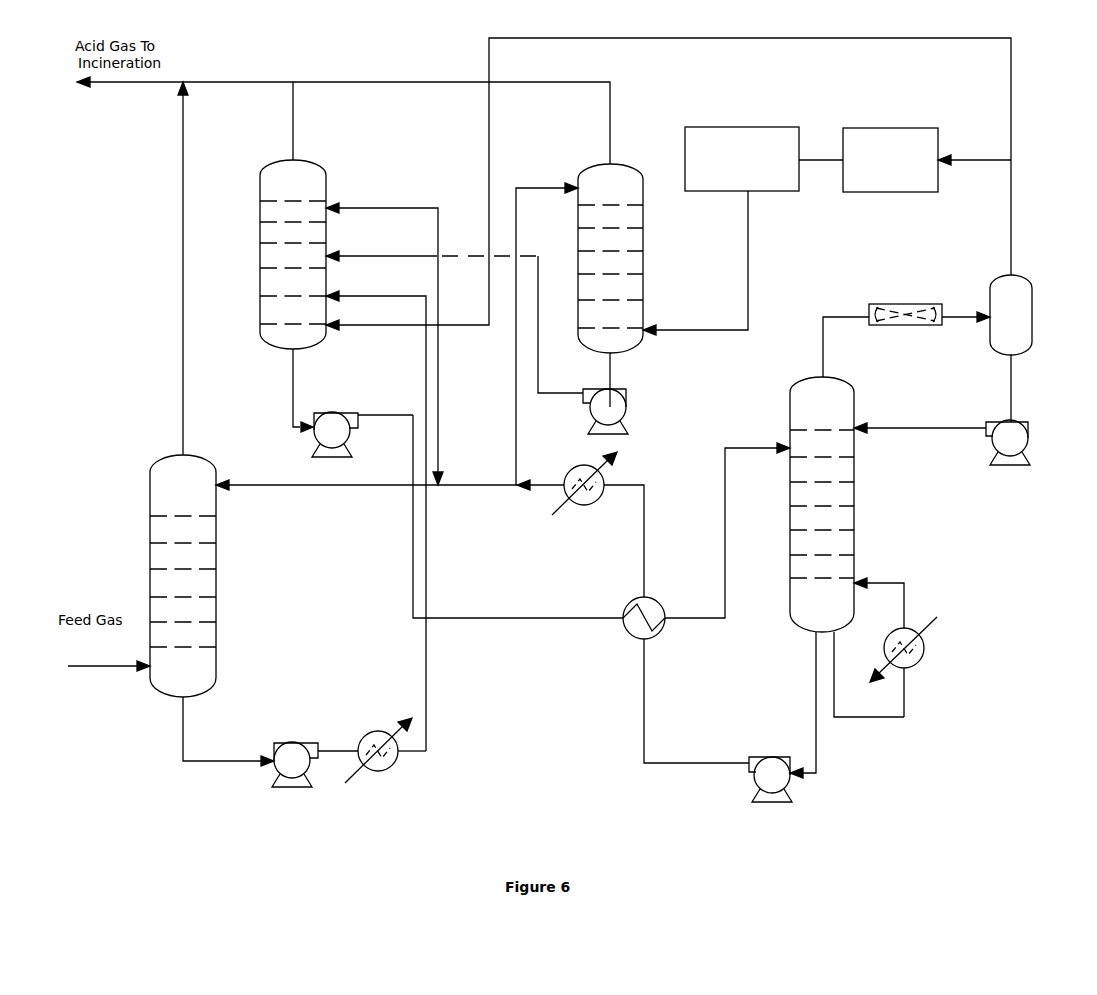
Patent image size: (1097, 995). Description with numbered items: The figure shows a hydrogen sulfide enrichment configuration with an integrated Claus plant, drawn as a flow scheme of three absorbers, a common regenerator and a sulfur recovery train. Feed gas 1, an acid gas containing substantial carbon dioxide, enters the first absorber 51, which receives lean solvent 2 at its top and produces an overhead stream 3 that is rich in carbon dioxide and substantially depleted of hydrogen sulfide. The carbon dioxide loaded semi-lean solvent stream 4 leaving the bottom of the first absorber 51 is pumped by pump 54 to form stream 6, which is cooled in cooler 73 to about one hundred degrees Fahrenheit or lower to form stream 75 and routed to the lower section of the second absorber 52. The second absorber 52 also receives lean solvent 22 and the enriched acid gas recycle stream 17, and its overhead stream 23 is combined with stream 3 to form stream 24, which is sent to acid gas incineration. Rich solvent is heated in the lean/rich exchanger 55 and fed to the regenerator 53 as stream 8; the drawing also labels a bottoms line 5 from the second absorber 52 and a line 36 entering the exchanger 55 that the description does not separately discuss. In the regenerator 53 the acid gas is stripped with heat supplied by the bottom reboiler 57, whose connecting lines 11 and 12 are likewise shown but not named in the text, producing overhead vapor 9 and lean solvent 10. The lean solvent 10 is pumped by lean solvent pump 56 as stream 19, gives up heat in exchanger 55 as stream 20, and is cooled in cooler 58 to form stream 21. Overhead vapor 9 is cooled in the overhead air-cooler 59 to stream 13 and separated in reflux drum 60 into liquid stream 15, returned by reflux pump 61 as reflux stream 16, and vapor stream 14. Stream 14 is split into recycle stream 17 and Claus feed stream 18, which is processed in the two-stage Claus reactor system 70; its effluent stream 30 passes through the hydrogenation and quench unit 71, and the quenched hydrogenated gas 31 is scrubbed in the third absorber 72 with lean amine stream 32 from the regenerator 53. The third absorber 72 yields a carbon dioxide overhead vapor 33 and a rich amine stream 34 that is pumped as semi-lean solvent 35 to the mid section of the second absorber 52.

The feed gas 1 is at (95, 666).
The lean solvent 2 is at (268, 485).
The overhead stream 3 is at (183, 395).
The semi-lean solvent stream 4 is at (205, 761).
The regenerator bottoms stream 5 is at (290, 360).
The pumped solvent stream 6 is at (330, 751).
The regenerator feed stream 8 is at (703, 618).
The regenerator overhead vapor 9 is at (843, 317).
The lean solvent stream 10 is at (815, 700).
The reboiler return stream 11 is at (863, 717).
The reboiler vapor stream 12 is at (890, 583).
The cooled overhead stream 13 is at (978, 317).
The enriched acid gas stream 14 is at (1011, 243).
The liquid stream 15 is at (1009, 400).
The reflux stream 16 is at (925, 428).
The recycling stream 17 is at (636, 38).
The Claus plant feed stream 18 is at (995, 160).
The pumped lean solvent stream 19 is at (705, 763).
The lean solvent stream 20 is at (643, 560).
The cooled lean solvent stream 21 is at (538, 483).
The lean solvent 22 is at (433, 208).
The second absorber overhead stream 23 is at (252, 81).
The combined overhead stream 24 is at (115, 82).
The Claus unit effluent gas 30 is at (830, 158).
The quenched hydrogenated gas 31 is at (748, 312).
The lean amine stream 32 is at (543, 188).
The third absorber overhead vapor 33 is at (413, 82).
The rich amine stream 34 is at (612, 370).
The semi-lean solvent stream 35 is at (403, 256).
The stream to heat exchanger 36 is at (600, 618).
The first absorber 51 is at (150, 545).
The second absorber 52 is at (260, 262).
The regenerator 53 is at (790, 520).
The pump 54 is at (288, 787).
The lean/rich exchanger 55 is at (660, 638).
The lean solvent pump 56 is at (763, 797).
The bottom reboiler 57 is at (920, 665).
The cooler 58 is at (590, 505).
The overhead air-cooler 59 is at (906, 304).
The reflux drum 60 is at (1025, 350).
The reflux pump 61 is at (1015, 462).
The two-stage Claus reactor system 70 is at (887, 128).
The hydrogenation and quench unit 71 is at (741, 127).
The third absorber 72 is at (607, 164).
The cooler 73 is at (626, 410).
The cooled semi-lean solvent stream 75 is at (414, 296).